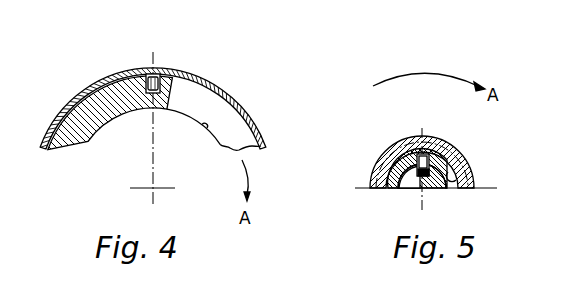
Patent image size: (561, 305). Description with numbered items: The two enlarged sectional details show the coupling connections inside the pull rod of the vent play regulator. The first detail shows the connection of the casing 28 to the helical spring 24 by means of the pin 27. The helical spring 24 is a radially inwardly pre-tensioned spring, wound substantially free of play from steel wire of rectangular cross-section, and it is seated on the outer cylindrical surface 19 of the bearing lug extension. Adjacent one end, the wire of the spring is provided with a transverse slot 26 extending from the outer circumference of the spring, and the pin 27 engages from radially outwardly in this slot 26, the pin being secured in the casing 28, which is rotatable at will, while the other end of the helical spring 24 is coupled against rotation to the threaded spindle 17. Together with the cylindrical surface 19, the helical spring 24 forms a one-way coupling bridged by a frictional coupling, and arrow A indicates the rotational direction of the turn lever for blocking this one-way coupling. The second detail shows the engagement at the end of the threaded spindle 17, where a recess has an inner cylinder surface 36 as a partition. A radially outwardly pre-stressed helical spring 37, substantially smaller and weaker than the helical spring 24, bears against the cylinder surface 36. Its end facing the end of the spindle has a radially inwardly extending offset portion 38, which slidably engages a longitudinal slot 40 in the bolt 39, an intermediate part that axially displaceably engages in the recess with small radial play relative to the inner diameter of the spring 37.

In FIG. 5, the threaded spindle 17 is at (378, 168).
In FIG. 4, the outer cylindrical surface 19 is at (204, 124).
In FIG. 4, the helical spring 24 is at (91, 128).
In FIG. 4, the transverse slot 26 is at (143, 110).
In FIG. 4, the pin 27 is at (156, 73).
In FIG. 4, the casing 28 is at (227, 98).
In FIG. 5, the inner cylinder surface 36 is at (470, 175).
In FIG. 5, the helical spring 37 is at (400, 152).
In FIG. 5, the offset portion 38 is at (442, 146).
In FIG. 5, the bolt 39 is at (404, 190).
In FIG. 5, the longitudinal slot 40 is at (431, 186).